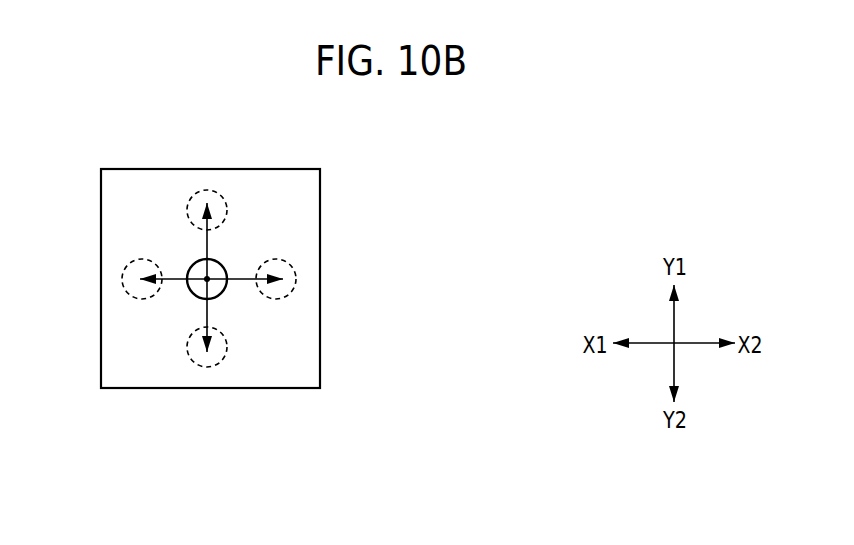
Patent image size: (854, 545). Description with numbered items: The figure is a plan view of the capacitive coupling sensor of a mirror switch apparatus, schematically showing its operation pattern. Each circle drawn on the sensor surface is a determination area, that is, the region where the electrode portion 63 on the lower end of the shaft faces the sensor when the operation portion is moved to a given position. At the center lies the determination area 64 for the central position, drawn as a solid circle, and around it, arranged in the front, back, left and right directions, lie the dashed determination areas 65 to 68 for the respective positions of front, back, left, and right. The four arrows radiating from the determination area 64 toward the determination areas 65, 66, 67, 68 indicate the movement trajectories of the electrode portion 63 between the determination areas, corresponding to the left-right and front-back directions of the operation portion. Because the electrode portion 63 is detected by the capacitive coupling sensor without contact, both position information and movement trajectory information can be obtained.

The electrode portion 63 is at (190, 294).
The determination area for the central position 64 is at (222, 298).
The determination area for the front position 65 is at (208, 190).
The determination area for the left position 66 is at (122, 279).
The determination area for the back position 67 is at (207, 367).
The determination area for the right position 68 is at (296, 282).